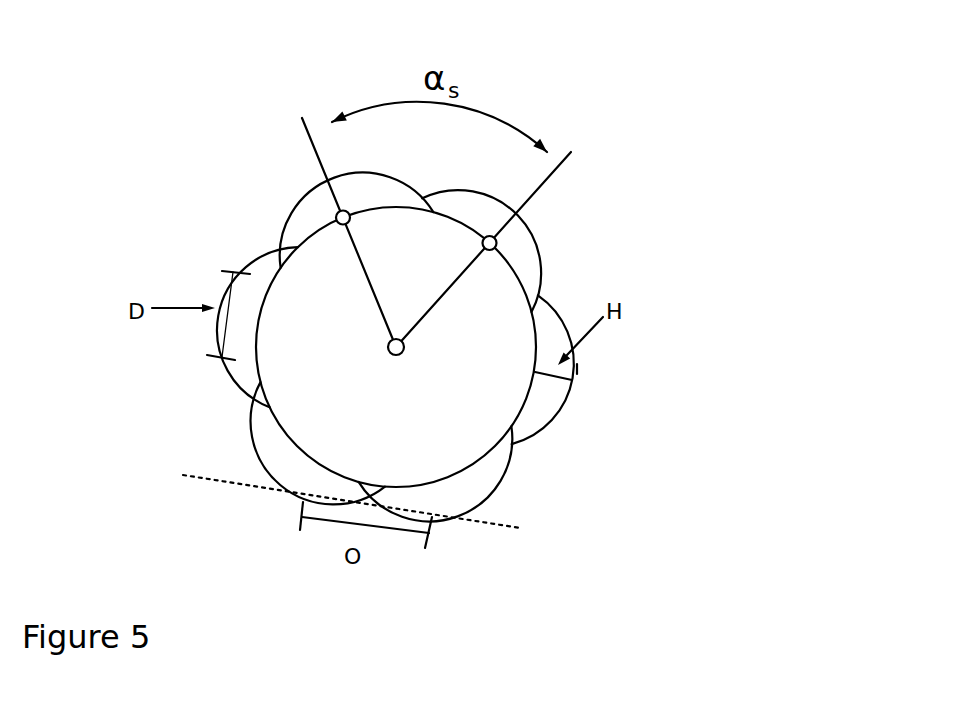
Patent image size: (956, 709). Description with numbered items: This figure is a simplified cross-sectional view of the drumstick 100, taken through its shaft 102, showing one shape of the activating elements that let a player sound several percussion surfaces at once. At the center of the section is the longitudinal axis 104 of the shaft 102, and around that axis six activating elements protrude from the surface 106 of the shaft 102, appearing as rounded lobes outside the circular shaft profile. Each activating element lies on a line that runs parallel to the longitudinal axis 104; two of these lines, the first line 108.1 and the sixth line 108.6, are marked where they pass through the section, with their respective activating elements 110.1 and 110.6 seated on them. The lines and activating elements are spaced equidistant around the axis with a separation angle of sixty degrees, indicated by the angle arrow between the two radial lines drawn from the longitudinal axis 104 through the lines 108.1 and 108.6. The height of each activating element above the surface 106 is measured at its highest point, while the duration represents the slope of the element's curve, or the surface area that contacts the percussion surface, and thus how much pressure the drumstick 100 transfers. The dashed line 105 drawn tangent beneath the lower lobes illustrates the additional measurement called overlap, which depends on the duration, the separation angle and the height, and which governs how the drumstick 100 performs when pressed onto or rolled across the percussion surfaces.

The drumstick 100 is at (773, 100).
The shaft 102 is at (430, 395).
The longitudinal axis 104 is at (388, 352).
The dashed line 105 is at (478, 523).
The surface 106 is at (515, 432).
The line 108.1 is at (496, 240).
The line 108.6 is at (336, 216).
The activating element 110.1 is at (523, 266).
The activating element 110.6 is at (308, 188).